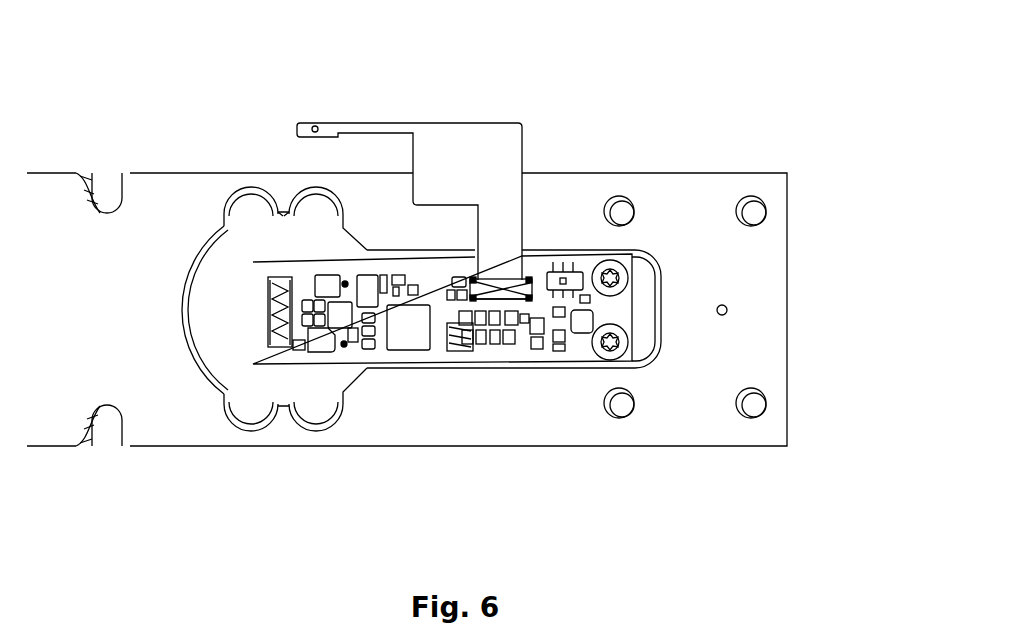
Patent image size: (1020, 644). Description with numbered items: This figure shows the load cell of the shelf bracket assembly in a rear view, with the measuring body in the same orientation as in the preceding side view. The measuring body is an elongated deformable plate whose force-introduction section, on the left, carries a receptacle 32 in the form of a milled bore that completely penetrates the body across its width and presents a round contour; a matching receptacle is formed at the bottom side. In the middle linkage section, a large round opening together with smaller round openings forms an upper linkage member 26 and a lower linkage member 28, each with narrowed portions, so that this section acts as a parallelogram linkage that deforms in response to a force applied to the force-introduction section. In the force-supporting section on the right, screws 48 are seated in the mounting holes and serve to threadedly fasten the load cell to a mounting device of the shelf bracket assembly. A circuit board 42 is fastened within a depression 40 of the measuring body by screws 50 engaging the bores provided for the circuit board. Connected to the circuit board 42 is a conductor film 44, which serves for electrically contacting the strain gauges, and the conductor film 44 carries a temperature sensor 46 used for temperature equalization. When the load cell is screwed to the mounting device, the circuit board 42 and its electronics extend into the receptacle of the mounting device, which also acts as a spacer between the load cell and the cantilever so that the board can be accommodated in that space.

The upper linkage member 26 is at (280, 188).
The lower linkage member 28 is at (286, 437).
The receptacle 32 is at (100, 160).
The depression 40 is at (676, 295).
The circuit board 42 is at (435, 353).
The conductor film 44 is at (459, 122).
The temperature sensor 46 is at (316, 125).
The screws 48 is at (624, 210).
The screws 50 is at (620, 275).